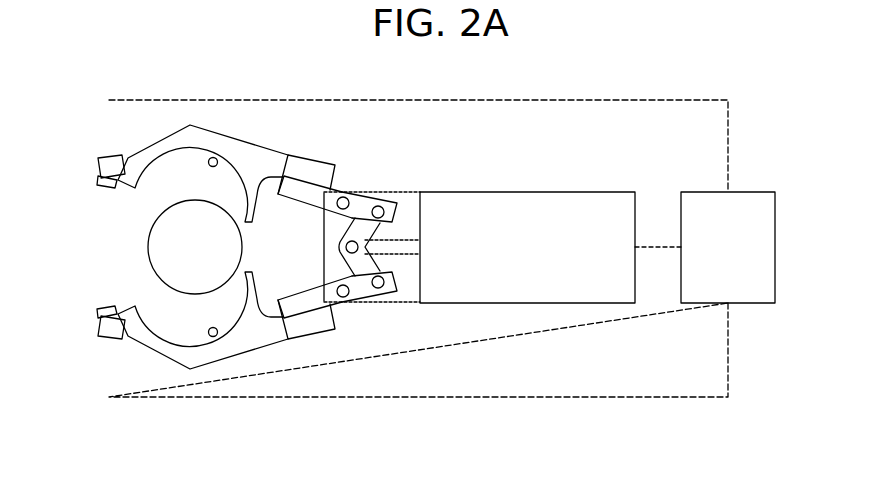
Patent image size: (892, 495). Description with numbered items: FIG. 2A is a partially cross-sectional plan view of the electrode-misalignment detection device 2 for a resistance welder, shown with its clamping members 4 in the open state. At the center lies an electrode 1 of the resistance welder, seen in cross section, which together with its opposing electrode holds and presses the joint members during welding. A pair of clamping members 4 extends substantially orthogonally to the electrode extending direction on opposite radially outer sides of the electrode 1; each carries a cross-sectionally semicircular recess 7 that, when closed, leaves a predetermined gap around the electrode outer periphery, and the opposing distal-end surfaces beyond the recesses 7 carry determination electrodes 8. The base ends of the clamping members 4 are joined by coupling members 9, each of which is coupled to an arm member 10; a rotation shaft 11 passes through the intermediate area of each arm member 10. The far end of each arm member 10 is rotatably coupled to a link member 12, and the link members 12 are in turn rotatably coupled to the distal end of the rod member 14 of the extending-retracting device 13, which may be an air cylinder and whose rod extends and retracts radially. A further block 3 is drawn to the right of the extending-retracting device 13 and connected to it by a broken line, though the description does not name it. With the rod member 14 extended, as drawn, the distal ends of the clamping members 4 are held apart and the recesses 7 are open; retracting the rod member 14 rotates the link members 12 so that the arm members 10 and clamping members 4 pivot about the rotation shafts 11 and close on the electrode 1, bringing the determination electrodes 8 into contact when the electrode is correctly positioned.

The electrode 1 is at (148, 247).
The electrode-misalignment detection device 2 is at (504, 317).
The controller 3 is at (776, 247).
The clamping member 4 is at (160, 142).
The recess 7 is at (219, 160).
The determination electrode 8 is at (102, 191).
The coupling member 9 is at (305, 157).
The arm member 10 is at (296, 200).
The rotation shaft 11 is at (345, 197).
The link member 12 is at (386, 200).
The extending-retracting device 13 is at (534, 192).
The rod member 14 is at (405, 240).